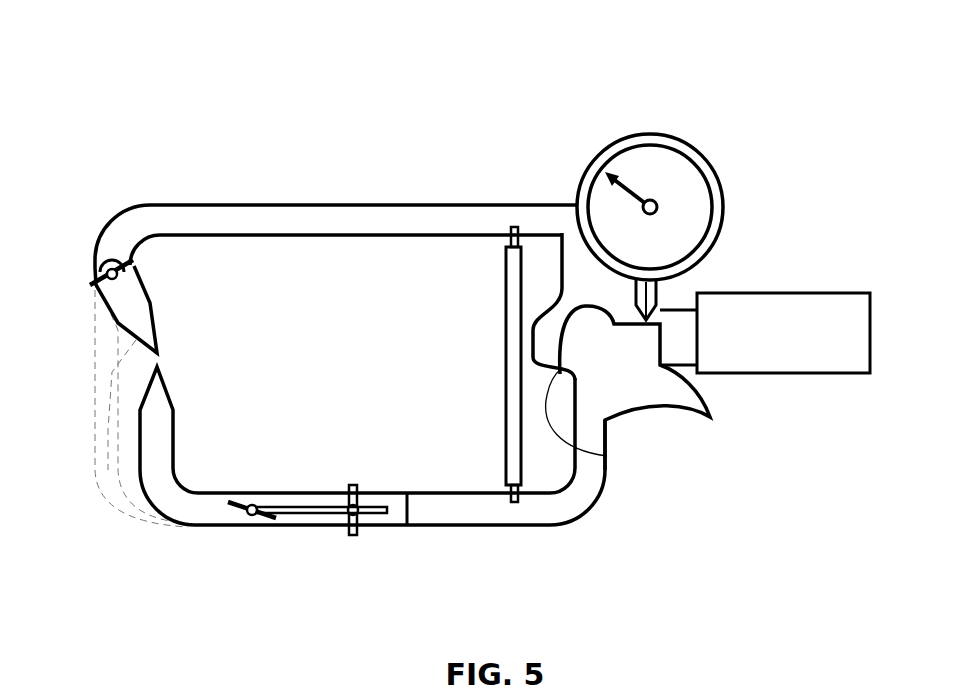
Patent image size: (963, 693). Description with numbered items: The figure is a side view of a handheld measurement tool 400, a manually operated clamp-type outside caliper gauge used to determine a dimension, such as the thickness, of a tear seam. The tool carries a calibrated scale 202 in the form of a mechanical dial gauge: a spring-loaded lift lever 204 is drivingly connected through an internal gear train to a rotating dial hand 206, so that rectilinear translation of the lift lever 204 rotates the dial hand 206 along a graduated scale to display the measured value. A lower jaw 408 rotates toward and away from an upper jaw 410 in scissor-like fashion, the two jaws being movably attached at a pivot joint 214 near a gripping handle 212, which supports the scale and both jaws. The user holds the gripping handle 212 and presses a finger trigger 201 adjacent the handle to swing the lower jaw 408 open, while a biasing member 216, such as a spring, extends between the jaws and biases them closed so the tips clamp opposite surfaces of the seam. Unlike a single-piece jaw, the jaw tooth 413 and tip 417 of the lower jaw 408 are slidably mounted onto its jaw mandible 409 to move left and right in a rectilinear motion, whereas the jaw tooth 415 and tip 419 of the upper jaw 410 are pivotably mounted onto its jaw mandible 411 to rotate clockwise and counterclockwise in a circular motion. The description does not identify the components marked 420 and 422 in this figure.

The measurement tool 400 is at (212, 54).
The upper jaw 410 is at (482, 178).
The jaw mandible 411 is at (433, 202).
The jaw tooth 415 is at (93, 272).
The jaw tip 419 is at (153, 322).
The valve 420 is at (135, 282).
The jaw tip 417 is at (168, 392).
The jaw tooth 413 is at (150, 503).
The bypass tube 422 is at (277, 528).
The lower jaw 408 is at (482, 548).
The jaw mandible 409 is at (433, 528).
The biasing member 216 is at (503, 403).
The finger trigger 201 is at (695, 414).
The pivot joint 214 is at (607, 456).
The gripping handle 212 is at (827, 292).
The calibrated scale 202 is at (713, 170).
The dial hand 206 is at (620, 180).
The lift lever 204 is at (657, 292).